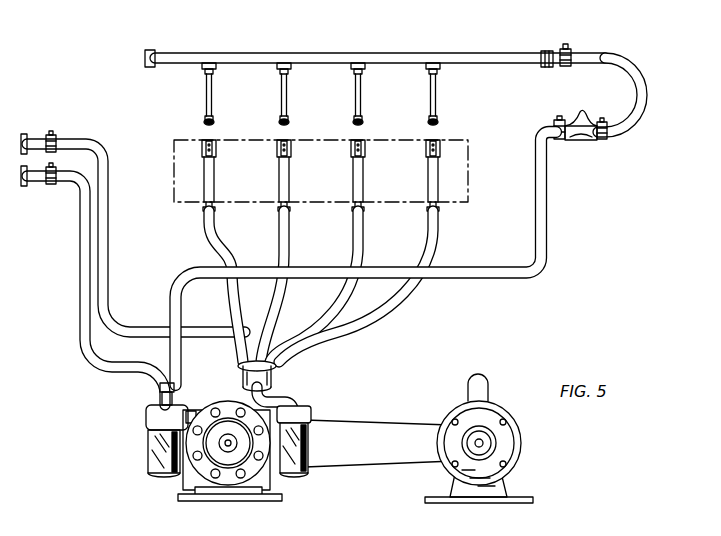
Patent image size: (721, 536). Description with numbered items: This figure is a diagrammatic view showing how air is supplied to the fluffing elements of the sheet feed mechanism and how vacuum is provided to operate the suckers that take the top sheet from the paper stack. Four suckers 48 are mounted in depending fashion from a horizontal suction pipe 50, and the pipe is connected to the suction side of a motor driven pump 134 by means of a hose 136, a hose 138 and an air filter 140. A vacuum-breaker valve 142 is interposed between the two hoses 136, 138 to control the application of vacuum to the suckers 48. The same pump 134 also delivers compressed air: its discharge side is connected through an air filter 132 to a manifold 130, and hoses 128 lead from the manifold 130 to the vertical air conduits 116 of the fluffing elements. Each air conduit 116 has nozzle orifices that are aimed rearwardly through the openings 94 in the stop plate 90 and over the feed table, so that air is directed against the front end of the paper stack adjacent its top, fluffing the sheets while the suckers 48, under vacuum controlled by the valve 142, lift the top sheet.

The suckers 48 is at (206, 100).
The suction pipe 50 is at (490, 53).
The stop plate 90 is at (468, 204).
The openings 94 is at (277, 148).
The air conduit 116 is at (283, 153).
The hoses 128 is at (355, 283).
The manifold 130 is at (278, 373).
The air filter 132 is at (310, 449).
The motor driven pump 134 is at (212, 400).
The hose 136 is at (640, 127).
The hose 138 is at (548, 220).
The air filter 140 is at (148, 455).
The vacuum-breaker valve 142 is at (585, 140).